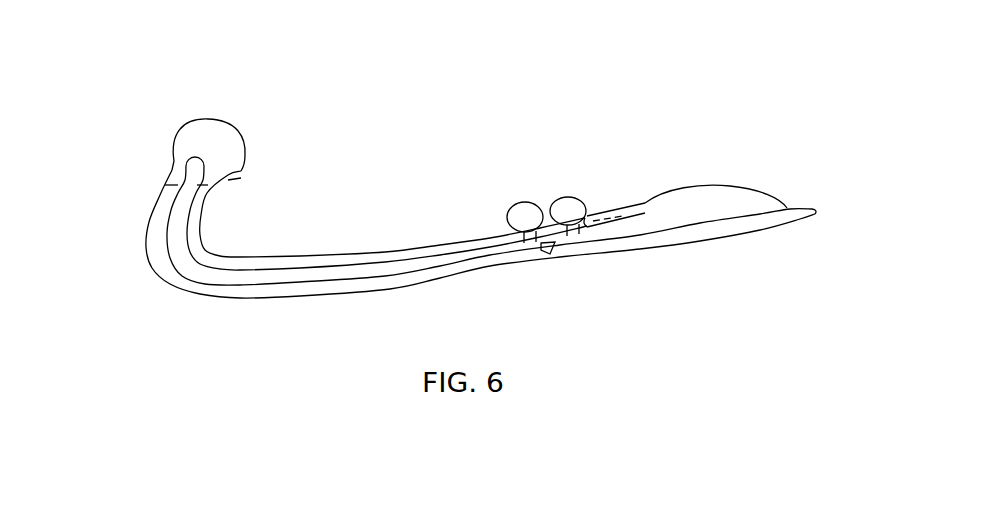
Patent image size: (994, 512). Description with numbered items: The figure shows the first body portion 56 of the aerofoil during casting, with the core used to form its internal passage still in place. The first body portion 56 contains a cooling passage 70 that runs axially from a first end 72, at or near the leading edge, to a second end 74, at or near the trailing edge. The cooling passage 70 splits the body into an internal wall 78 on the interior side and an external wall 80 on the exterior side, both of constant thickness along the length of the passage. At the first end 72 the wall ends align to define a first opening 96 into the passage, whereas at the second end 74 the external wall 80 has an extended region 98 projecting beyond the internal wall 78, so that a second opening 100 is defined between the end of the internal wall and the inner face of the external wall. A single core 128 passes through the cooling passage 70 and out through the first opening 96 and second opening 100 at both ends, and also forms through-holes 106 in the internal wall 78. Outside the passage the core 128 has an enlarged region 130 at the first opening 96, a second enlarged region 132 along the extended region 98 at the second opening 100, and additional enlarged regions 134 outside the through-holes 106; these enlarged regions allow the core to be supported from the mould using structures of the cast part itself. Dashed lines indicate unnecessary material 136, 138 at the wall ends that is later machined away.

The first body portion 56 is at (600, 81).
The cooling passage 70 is at (302, 275).
The first end 72 is at (196, 192).
The second end 74 is at (618, 236).
The internal wall 78 is at (358, 254).
The external wall 80 is at (368, 288).
The first opening 96 is at (200, 183).
The extended region 98 is at (713, 230).
The second opening 100 is at (640, 240).
The through-holes 106 is at (557, 241).
The core 128 is at (443, 263).
The enlarged region 130 is at (195, 148).
The second enlarged region 132 is at (725, 202).
The additional enlarged regions 134 is at (575, 197).
The unnecessary material 136 is at (171, 177).
The unnecessary material 138 is at (623, 215).